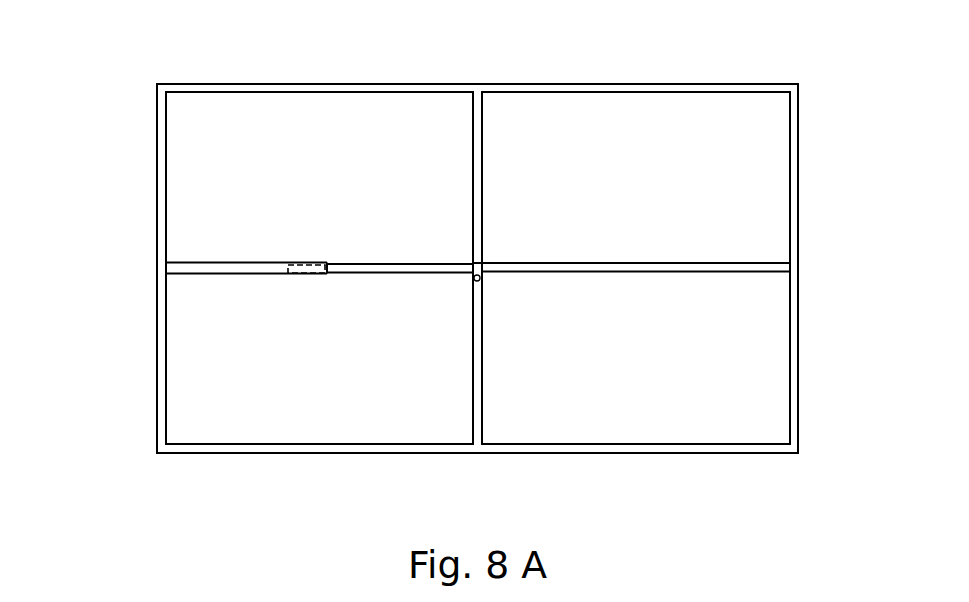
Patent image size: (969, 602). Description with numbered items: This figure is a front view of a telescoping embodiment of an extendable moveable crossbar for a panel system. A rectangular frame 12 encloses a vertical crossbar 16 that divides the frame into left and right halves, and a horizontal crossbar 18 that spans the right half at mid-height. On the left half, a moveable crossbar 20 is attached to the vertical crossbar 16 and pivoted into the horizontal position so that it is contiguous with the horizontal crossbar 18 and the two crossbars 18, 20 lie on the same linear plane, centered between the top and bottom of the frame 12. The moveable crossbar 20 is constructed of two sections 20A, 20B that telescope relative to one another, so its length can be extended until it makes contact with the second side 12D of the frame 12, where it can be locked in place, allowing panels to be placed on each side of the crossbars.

The frame 12 is at (432, 251).
The second side of frame 12D is at (103, 268).
The vertical crossbar 16 is at (564, 233).
The horizontal crossbar 18 is at (673, 196).
The moveable crossbar 20 is at (265, 317).
The first section of moveable crossbar 20A is at (188, 204).
The second section of moveable crossbar 20B is at (349, 204).